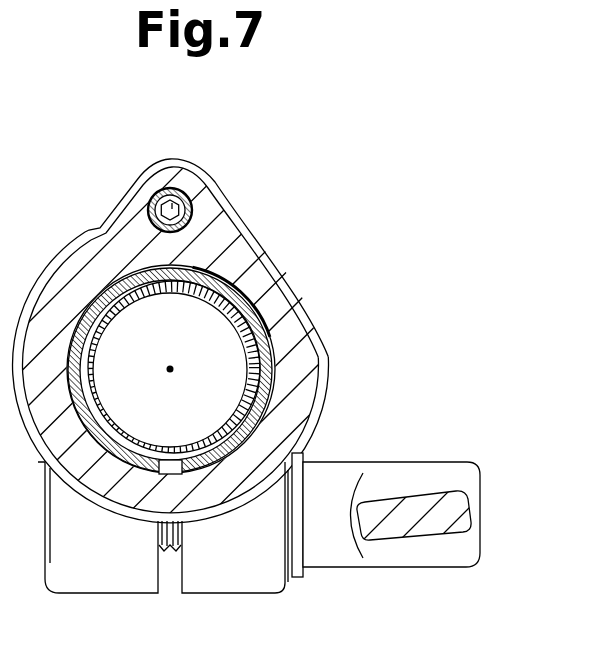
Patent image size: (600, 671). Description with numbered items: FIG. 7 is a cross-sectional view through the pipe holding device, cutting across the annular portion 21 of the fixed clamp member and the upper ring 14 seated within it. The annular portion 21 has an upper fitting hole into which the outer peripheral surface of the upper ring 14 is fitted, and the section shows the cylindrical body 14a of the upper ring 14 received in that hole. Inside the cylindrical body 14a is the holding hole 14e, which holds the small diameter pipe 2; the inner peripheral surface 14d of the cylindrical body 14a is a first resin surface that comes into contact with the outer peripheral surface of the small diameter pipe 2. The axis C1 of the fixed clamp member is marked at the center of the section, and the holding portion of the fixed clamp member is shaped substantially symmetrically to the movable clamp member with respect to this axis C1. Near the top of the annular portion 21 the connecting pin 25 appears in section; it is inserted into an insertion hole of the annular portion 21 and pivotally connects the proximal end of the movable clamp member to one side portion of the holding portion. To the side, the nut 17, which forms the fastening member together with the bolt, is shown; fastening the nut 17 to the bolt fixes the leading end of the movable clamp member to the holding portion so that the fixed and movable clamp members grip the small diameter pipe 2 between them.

The small diameter pipe 2 is at (210, 268).
The annular portion 21 is at (72, 273).
The connecting pin 25 is at (186, 190).
The upper ring 14 is at (256, 370).
The cylindrical body 14a is at (258, 312).
The inner peripheral surface 14d is at (252, 377).
The holding hole 14e is at (280, 367).
The axis C1 is at (171, 369).
The nut 17 is at (470, 454).